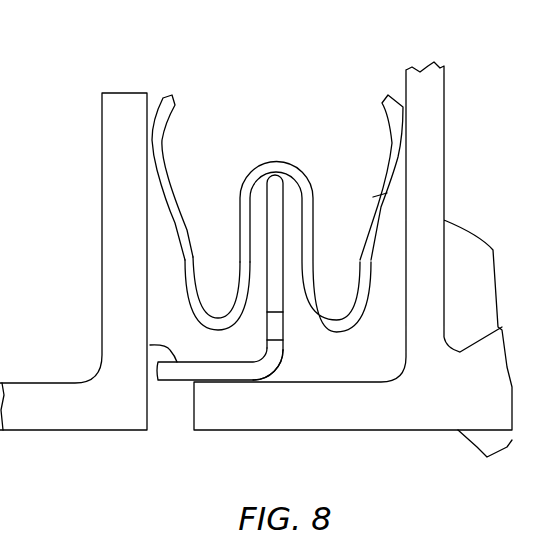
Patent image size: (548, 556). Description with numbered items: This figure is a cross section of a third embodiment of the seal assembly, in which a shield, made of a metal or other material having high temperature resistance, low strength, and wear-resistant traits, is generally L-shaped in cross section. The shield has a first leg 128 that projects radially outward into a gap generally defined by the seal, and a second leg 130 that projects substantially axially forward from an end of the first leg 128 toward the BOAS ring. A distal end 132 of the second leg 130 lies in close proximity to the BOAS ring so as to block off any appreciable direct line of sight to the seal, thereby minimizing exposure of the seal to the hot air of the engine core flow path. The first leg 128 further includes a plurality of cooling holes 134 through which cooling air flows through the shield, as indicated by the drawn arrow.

The first leg 128 is at (265, 262).
The second leg 130 is at (183, 385).
The distal end 132 is at (150, 345).
The cooling holes 134 is at (205, 343).